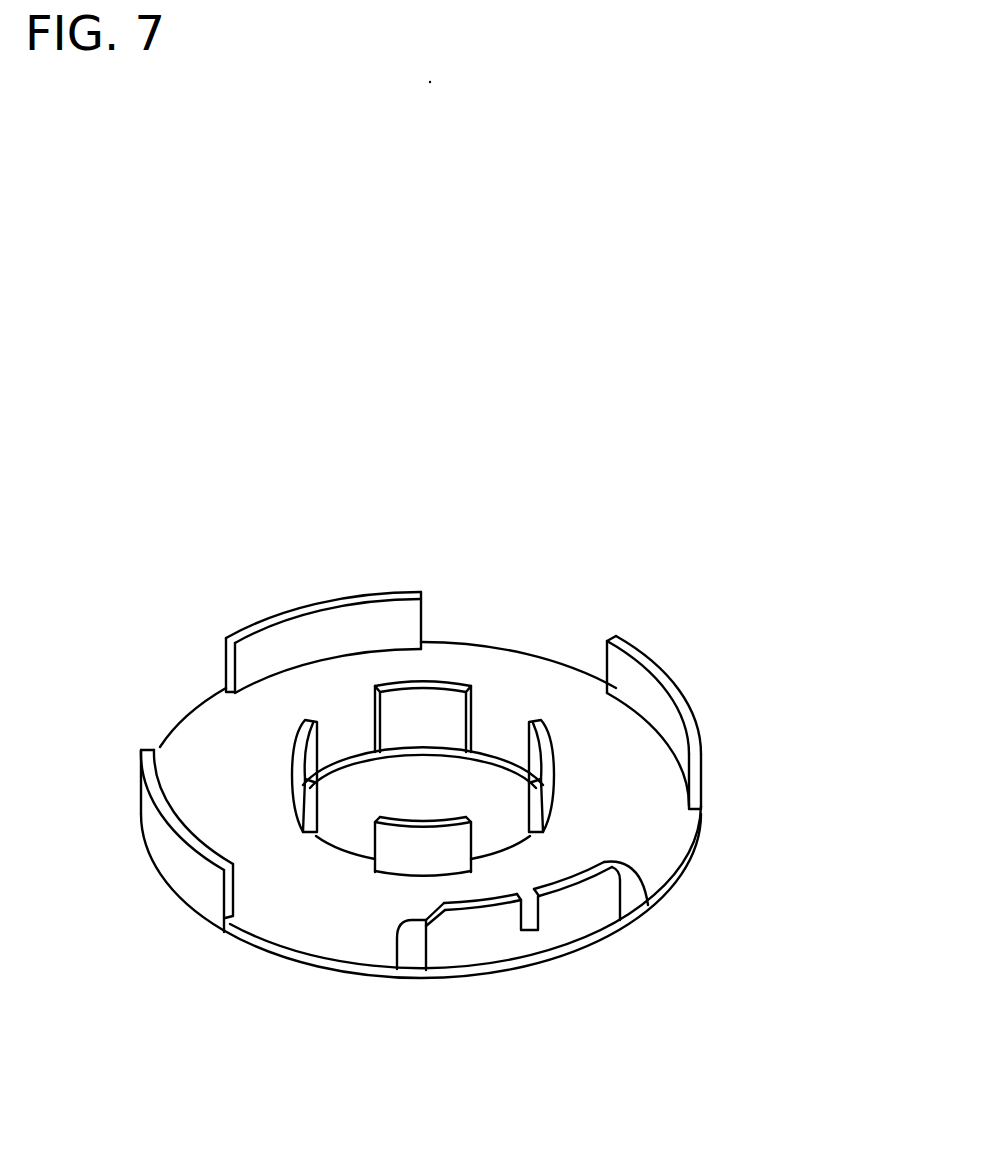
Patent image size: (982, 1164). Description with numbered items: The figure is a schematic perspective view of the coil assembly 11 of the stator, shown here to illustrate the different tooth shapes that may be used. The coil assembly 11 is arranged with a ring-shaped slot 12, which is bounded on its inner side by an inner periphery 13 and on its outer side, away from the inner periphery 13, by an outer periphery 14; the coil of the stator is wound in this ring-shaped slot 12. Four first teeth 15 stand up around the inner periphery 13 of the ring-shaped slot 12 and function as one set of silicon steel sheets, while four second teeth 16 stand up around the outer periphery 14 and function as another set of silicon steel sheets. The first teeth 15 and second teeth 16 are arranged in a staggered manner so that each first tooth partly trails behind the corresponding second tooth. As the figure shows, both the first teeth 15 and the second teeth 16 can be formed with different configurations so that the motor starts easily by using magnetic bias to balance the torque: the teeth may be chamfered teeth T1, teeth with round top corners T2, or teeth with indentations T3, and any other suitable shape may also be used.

The coil assembly 11 is at (716, 675).
The ring-shaped slot 12 is at (558, 697).
The inner periphery 13 is at (348, 746).
The outer periphery 14 is at (690, 858).
The first teeth 15 is at (442, 680).
The second teeth 16 is at (695, 740).
The chamfered teeth T1 is at (397, 928).
The teeth with round top corners T2 is at (625, 870).
The teeth with indentations T3 is at (527, 918).